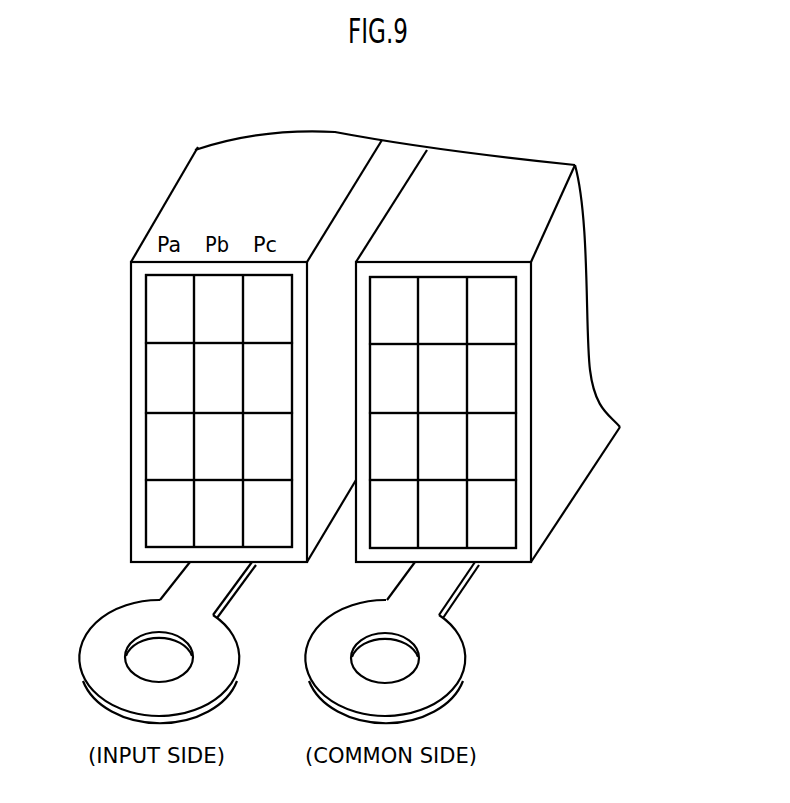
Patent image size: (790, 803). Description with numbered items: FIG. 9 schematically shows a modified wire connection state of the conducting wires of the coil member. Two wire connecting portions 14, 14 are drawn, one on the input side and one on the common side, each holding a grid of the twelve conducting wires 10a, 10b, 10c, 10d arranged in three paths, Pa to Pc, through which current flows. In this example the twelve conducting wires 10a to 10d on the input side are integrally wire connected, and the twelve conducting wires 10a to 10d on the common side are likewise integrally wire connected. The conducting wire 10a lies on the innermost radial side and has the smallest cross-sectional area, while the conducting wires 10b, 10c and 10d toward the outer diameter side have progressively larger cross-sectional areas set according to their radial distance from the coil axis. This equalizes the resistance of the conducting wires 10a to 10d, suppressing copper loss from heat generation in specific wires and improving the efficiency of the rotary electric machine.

The wire connecting portion 14 is at (222, 201).
The conducting wire 10a is at (262, 509).
The conducting wire 10b is at (262, 442).
The conducting wire 10c is at (262, 377).
The conducting wire 10d is at (262, 307).